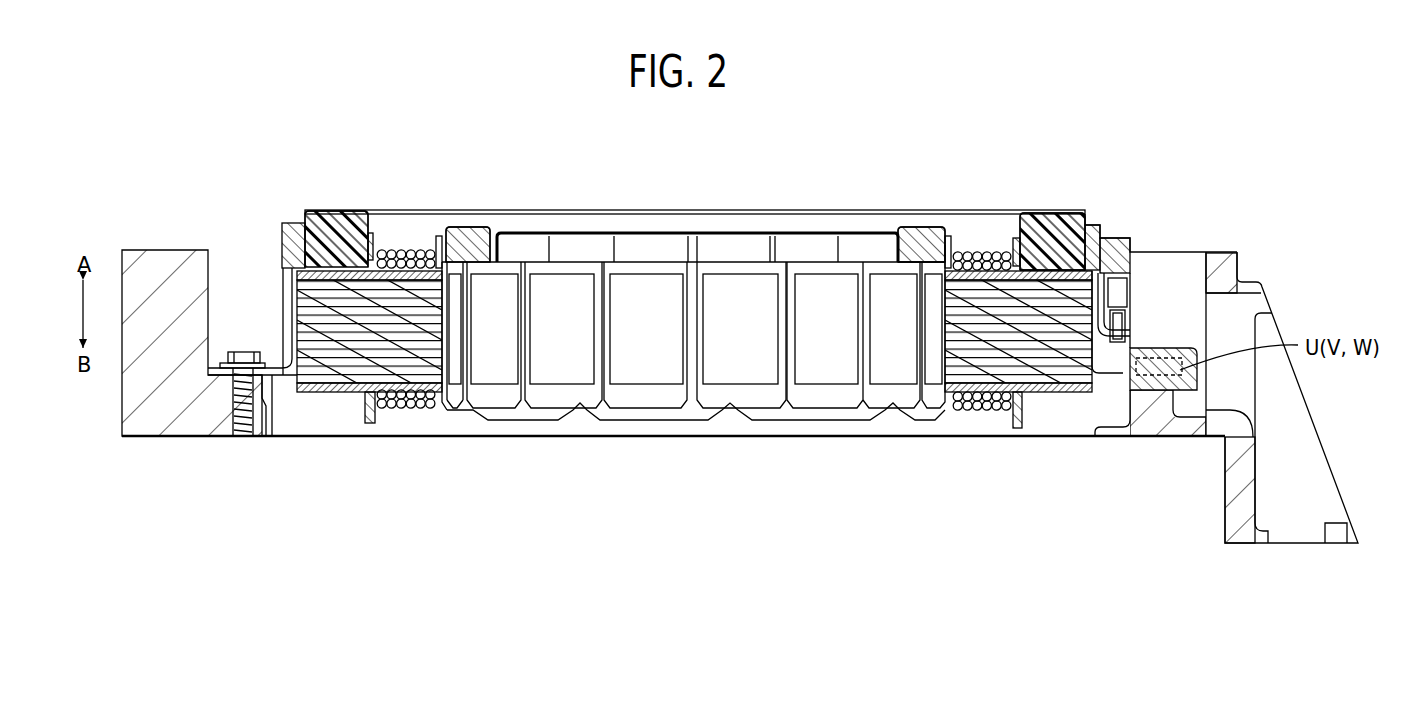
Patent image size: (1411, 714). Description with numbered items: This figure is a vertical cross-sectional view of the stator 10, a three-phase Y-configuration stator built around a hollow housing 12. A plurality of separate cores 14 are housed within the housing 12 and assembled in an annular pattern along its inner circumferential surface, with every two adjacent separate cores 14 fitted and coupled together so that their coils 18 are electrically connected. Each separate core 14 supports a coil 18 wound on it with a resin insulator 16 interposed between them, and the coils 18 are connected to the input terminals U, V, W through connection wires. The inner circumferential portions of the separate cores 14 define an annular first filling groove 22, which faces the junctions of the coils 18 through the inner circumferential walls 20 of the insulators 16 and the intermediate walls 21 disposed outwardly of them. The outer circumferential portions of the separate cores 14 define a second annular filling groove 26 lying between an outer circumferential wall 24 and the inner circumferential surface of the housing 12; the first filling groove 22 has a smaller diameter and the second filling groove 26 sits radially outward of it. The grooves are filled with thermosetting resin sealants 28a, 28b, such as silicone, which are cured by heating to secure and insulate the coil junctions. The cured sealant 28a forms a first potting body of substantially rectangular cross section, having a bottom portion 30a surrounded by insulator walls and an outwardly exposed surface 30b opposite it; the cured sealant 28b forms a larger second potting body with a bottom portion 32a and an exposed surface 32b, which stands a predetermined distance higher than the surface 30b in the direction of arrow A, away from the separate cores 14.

The stator 10 is at (1108, 206).
The housing 12 is at (160, 260).
The separate cores 14 is at (413, 205).
The insulators 16 is at (335, 392).
The coils 18 is at (397, 408).
The inner circumferential walls 20 is at (498, 253).
The intermediate walls 21 is at (440, 243).
The first filling groove 22 is at (477, 237).
The outer circumferential wall 24 is at (385, 240).
The second filling groove 26 is at (330, 260).
The sealant 28a is at (907, 224).
The sealant 28b is at (1032, 212).
The bottom portion 30a is at (478, 262).
The outwardly exposed surface 30b is at (457, 228).
The bottom portion 32a is at (343, 272).
The outwardly exposed surface 32b is at (318, 212).